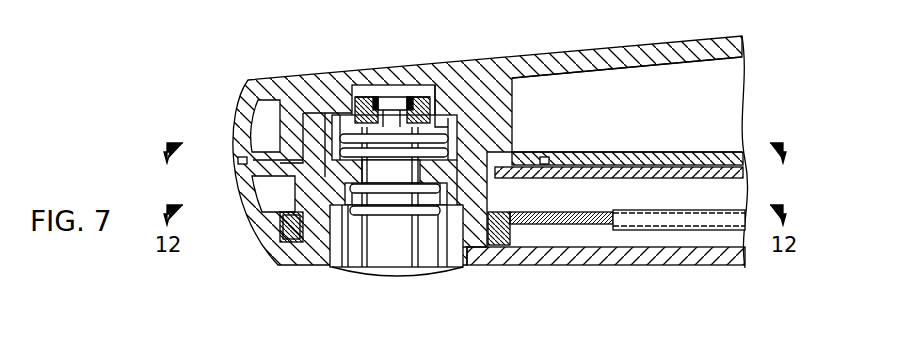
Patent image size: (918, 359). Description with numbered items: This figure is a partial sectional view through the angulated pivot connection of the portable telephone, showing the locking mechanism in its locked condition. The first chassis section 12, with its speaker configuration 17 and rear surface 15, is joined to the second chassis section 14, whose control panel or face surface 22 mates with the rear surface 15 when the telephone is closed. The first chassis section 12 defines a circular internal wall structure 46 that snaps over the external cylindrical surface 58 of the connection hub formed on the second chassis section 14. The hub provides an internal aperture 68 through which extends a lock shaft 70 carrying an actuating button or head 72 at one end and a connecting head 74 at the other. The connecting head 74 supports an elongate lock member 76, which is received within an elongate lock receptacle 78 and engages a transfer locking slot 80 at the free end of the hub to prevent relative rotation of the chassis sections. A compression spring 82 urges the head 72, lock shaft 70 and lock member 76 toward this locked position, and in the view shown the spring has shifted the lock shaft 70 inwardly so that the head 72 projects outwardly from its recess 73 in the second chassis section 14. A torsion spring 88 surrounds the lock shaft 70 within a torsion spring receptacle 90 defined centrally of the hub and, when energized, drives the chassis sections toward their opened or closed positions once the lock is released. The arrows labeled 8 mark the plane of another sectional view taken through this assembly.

The section line 8- 8 is at (474, 166).
The first chassis section 12 is at (653, 43).
The second chassis section 14 is at (617, 265).
The rear surface 15 is at (658, 173).
The speaker configuration 17 is at (533, 258).
The control panel or face surface 22 is at (703, 163).
The circular internal wall structure 46 is at (285, 132).
The external cylindrical surface 58 is at (293, 122).
The internal aperture 68 is at (440, 174).
The lock shaft 70 is at (257, 228).
The actuating button or head 72 is at (363, 258).
The recess 73 is at (302, 260).
The connecting head 74 is at (415, 100).
The elongate lock member 76 is at (433, 110).
The elongate lock receptacle 78 is at (393, 103).
The transfer locking slot 80 is at (372, 103).
The compression spring 82 is at (400, 200).
The torsion spring 88 is at (352, 95).
The torsion spring receptacle 90 is at (510, 62).